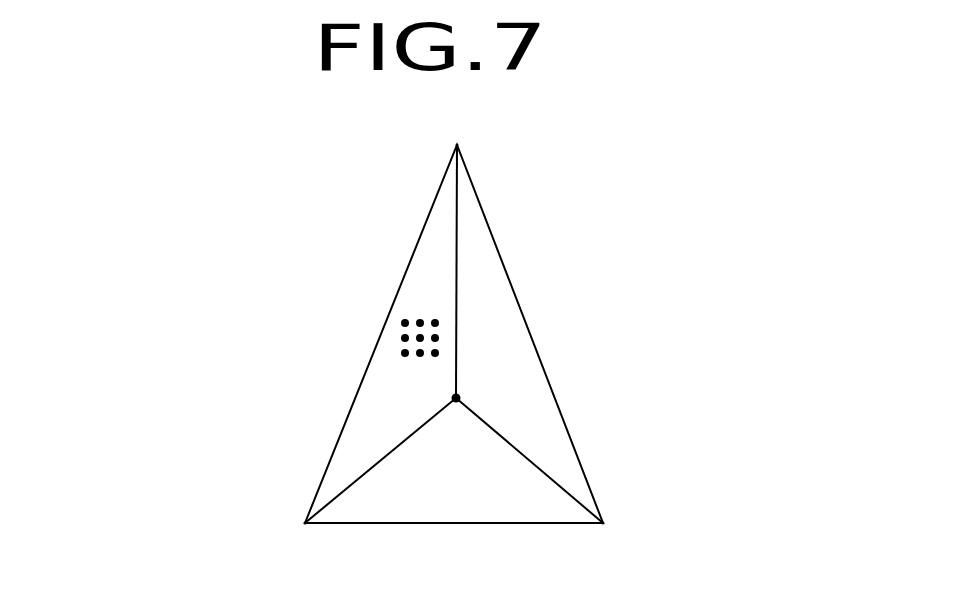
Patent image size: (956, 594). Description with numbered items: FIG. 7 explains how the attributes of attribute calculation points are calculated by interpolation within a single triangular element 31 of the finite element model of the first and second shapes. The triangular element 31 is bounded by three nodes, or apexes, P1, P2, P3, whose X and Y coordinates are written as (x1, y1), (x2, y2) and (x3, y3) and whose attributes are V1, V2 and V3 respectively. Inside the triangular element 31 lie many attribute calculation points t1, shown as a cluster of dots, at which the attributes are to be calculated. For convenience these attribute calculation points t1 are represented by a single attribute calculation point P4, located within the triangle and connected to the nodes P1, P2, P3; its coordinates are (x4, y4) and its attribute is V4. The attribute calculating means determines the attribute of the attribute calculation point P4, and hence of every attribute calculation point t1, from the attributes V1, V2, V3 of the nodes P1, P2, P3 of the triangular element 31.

The triangular element 31 is at (537, 352).
The node P1 is at (305, 523).
The node P2 is at (457, 145).
The node P3 is at (603, 523).
The attribute calculation point P4 is at (456, 398).
The attribute calculation point t1 is at (400, 322).